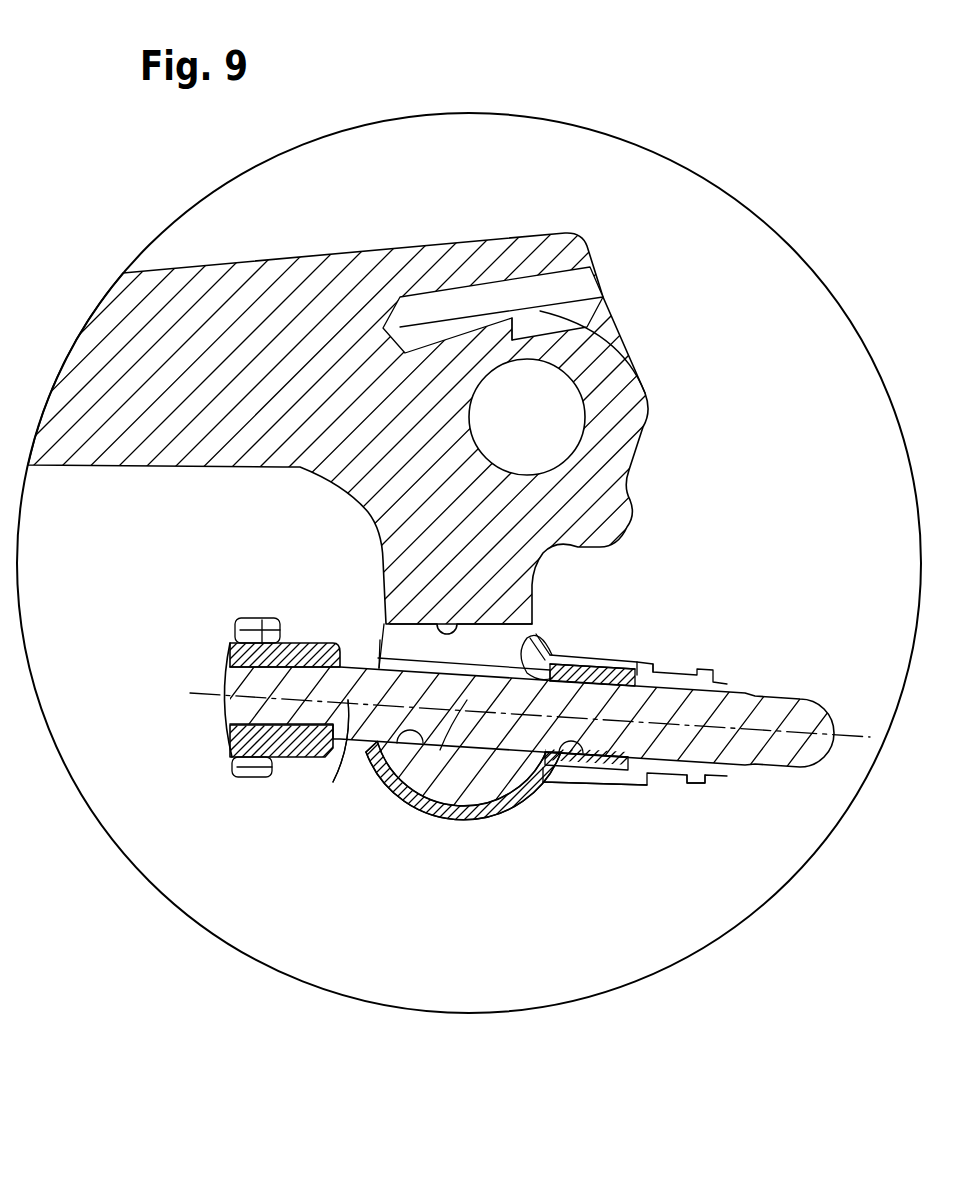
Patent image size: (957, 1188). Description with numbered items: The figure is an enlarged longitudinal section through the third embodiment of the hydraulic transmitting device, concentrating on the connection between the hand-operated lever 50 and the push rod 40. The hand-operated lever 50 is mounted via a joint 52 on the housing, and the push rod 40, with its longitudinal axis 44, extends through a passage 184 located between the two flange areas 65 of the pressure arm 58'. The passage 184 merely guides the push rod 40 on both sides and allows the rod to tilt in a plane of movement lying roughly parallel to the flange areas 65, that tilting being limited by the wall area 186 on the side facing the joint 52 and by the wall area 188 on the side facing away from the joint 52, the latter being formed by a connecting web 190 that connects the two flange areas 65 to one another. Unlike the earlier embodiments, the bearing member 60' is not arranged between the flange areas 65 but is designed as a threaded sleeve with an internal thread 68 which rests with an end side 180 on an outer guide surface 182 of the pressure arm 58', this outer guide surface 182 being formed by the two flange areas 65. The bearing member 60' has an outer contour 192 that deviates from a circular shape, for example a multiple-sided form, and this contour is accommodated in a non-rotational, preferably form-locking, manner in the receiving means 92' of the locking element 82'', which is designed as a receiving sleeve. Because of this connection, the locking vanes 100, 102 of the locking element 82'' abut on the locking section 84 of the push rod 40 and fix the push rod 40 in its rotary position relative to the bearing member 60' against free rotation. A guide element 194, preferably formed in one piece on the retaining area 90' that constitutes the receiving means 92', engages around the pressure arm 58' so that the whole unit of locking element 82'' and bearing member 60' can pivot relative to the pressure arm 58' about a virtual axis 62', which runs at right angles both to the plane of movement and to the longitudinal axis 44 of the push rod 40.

The hand-operated lever 50 is at (342, 290).
The joint 52 is at (553, 423).
The longitudinal axis 44 is at (840, 735).
The push rod 40 is at (360, 703).
The passage 184 is at (397, 662).
The flange areas 65 is at (397, 657).
The wall area 186 is at (433, 617).
The pressure arm 58' is at (555, 615).
The end side 180 is at (540, 640).
The receiving means 92' is at (591, 652).
The retaining area 90' is at (620, 621).
The locking vane 100 is at (687, 670).
The outer contour 192 is at (627, 660).
The bearing member 60' is at (583, 810).
The internal thread 68 is at (567, 785).
The locking section 84 is at (660, 783).
The locking vane 102 is at (682, 784).
The locking element 82'' is at (603, 846).
The virtual axis 62' is at (458, 812).
The guide element 194 is at (447, 815).
The connecting web 190 is at (480, 780).
The outer guide surface 182 is at (523, 803).
The wall area 188 is at (387, 800).